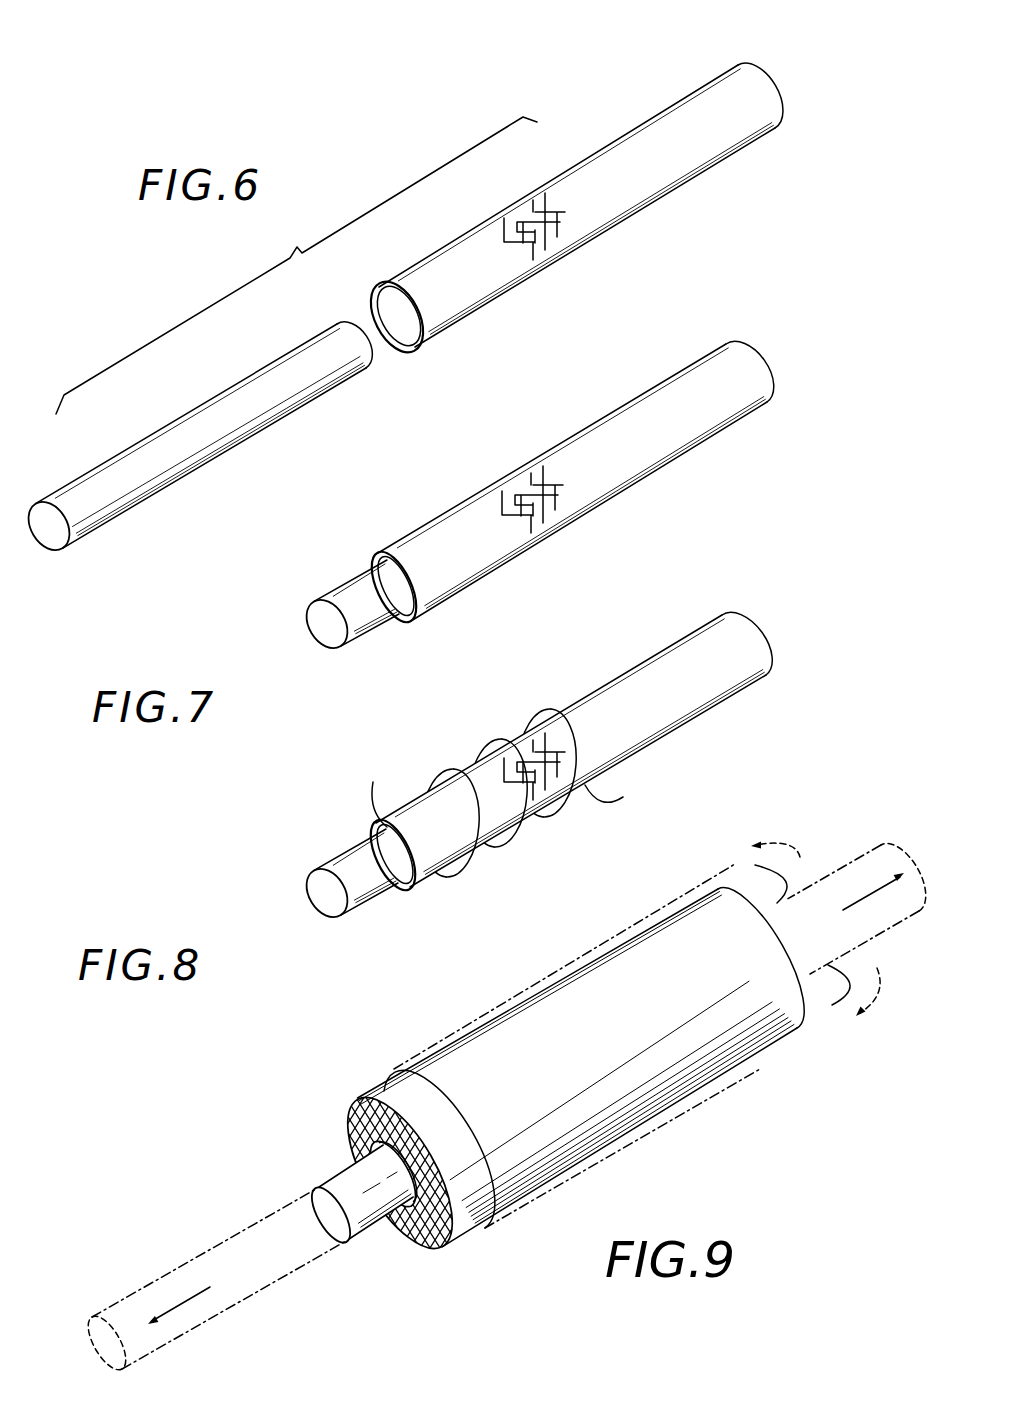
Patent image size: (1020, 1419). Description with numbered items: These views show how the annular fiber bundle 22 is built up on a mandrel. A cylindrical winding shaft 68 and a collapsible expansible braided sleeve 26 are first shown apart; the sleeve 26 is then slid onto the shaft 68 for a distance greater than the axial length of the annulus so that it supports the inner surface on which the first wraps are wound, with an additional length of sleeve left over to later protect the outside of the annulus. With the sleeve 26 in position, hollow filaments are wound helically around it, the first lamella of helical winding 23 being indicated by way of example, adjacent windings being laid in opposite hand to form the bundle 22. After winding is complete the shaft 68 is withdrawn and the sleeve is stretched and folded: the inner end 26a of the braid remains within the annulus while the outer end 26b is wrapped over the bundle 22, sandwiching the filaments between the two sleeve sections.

In FIG. 6, the winding shaft 68 is at (226, 444).
In FIG. 7, the winding shaft 68 is at (352, 620).
In FIG. 8, the winding shaft 68 is at (390, 892).
In FIG. 9, the winding shaft 68 is at (335, 1238).
In FIG. 6, the braided sleeve 26 is at (490, 273).
In FIG. 7, the braided sleeve 26 is at (522, 548).
In FIG. 8, the braided sleeve 26 is at (532, 822).
In FIG. 8, the first lamella of helical winding 23 is at (467, 860).
In FIG. 9, the annular bundle 22 is at (437, 1250).
In FIG. 9, the inner end of the braid 26a is at (373, 1153).
In FIG. 9, the outer end of the braid 26b is at (400, 1073).